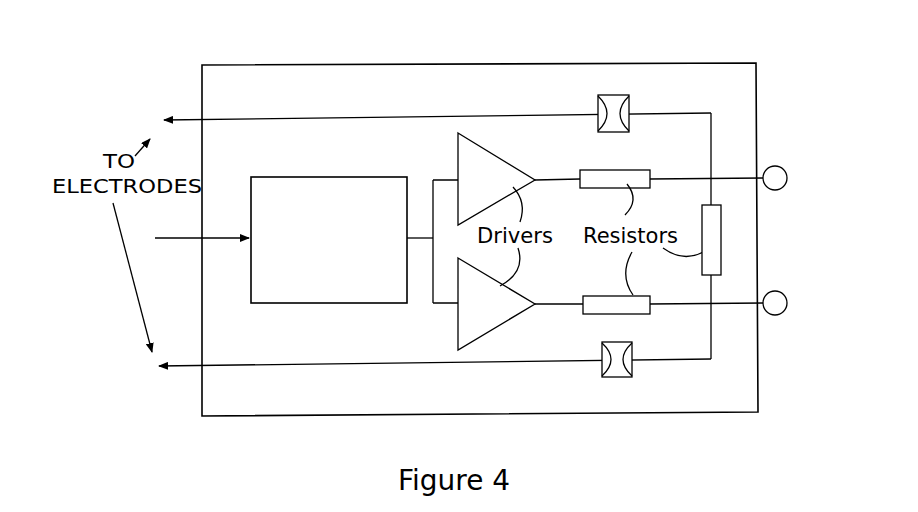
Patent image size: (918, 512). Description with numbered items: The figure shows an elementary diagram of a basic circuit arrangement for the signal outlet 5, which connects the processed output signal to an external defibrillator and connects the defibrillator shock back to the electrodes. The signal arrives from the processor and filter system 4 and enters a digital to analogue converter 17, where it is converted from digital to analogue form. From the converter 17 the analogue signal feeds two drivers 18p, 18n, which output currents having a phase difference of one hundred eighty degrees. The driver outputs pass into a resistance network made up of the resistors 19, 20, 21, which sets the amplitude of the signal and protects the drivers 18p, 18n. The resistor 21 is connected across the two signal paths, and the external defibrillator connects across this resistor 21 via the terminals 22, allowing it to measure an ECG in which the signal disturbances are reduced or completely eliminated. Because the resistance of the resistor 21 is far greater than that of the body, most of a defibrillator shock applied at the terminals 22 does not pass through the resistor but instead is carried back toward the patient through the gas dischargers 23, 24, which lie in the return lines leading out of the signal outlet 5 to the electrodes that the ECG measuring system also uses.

The processor and filter system 4 is at (188, 232).
The signal outlet 5 is at (480, 239).
The digital to analogue converter (DAC) 17 is at (342, 240).
The driver 18p is at (519, 179).
The driver 18n is at (520, 304).
The resistor of resistance network 19 is at (671, 180).
The resistor of resistance network 20 is at (673, 306).
The resistor 21 is at (727, 240).
The terminals 22 is at (779, 186).
The gas discharger 23 is at (437, 148).
The gas discharger 24 is at (435, 328).